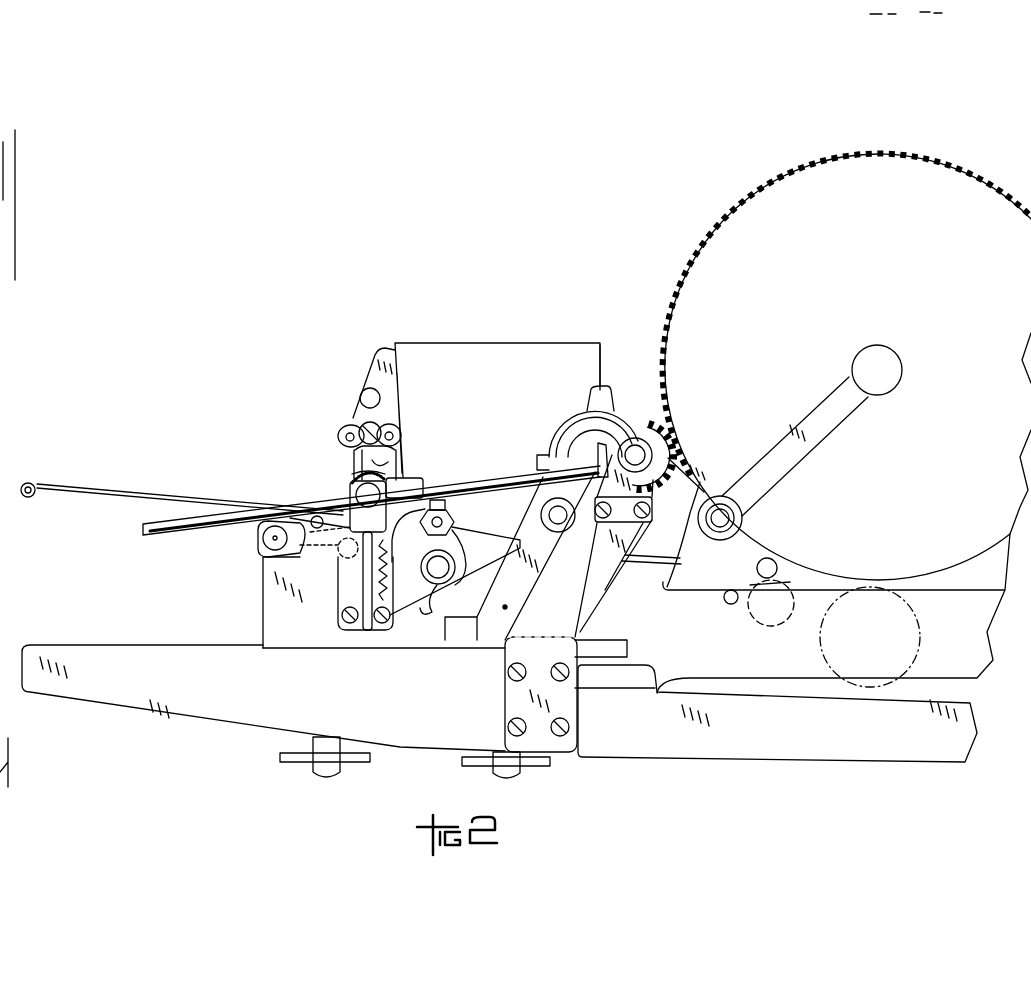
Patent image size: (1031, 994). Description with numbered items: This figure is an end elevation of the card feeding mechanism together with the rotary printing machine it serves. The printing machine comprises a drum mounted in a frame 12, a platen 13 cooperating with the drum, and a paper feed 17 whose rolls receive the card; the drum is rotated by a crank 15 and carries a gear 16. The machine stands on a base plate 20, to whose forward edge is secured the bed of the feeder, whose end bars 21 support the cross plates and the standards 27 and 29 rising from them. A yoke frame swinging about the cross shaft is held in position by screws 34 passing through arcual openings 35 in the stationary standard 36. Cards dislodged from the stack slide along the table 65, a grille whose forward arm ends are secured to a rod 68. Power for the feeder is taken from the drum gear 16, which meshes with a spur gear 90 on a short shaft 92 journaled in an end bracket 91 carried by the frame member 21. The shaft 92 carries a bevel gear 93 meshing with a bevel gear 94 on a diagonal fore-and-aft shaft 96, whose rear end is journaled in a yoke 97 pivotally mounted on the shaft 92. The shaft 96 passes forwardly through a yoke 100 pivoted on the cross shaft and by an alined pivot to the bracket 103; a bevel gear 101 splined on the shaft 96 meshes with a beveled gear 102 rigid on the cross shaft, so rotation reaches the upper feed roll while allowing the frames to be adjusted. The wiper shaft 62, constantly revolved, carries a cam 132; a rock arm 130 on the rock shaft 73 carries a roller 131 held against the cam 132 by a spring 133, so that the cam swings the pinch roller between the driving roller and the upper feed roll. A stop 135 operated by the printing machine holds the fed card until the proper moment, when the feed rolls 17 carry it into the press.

The frame 12 is at (803, 527).
The platen 13 is at (922, 649).
The crank 15 is at (777, 478).
The gear 16 is at (676, 288).
The paper feed 17 is at (760, 569).
The base plate 20 is at (776, 713).
The end bar 21 is at (286, 711).
The standard 27 is at (345, 595).
The standard 29 is at (520, 612).
The screw 34 is at (353, 420).
The arcual opening 35 is at (392, 435).
The stationary standard 36 is at (403, 473).
The rotary shaft 62 is at (455, 563).
The table 65 is at (190, 494).
The rod 68 is at (34, 496).
The shaft 73 is at (265, 545).
The spur gear 90 is at (637, 413).
The end bracket 91 is at (614, 546).
The short shaft 92 is at (645, 453).
The bevel gear 93 is at (663, 407).
The bevel gear 94 is at (596, 477).
The diagonal fore-and-aft shaft 96 is at (498, 455).
The yoke 97 is at (562, 423).
The yoke 100 is at (420, 477).
The bevel gear 101 is at (402, 457).
The beveled gear 102 is at (358, 470).
The bracket 103 is at (350, 483).
The rock arm 130 is at (350, 538).
The roller 131 is at (452, 525).
The cam 132 is at (437, 593).
The spring 133 is at (390, 583).
The stop 135 is at (783, 580).